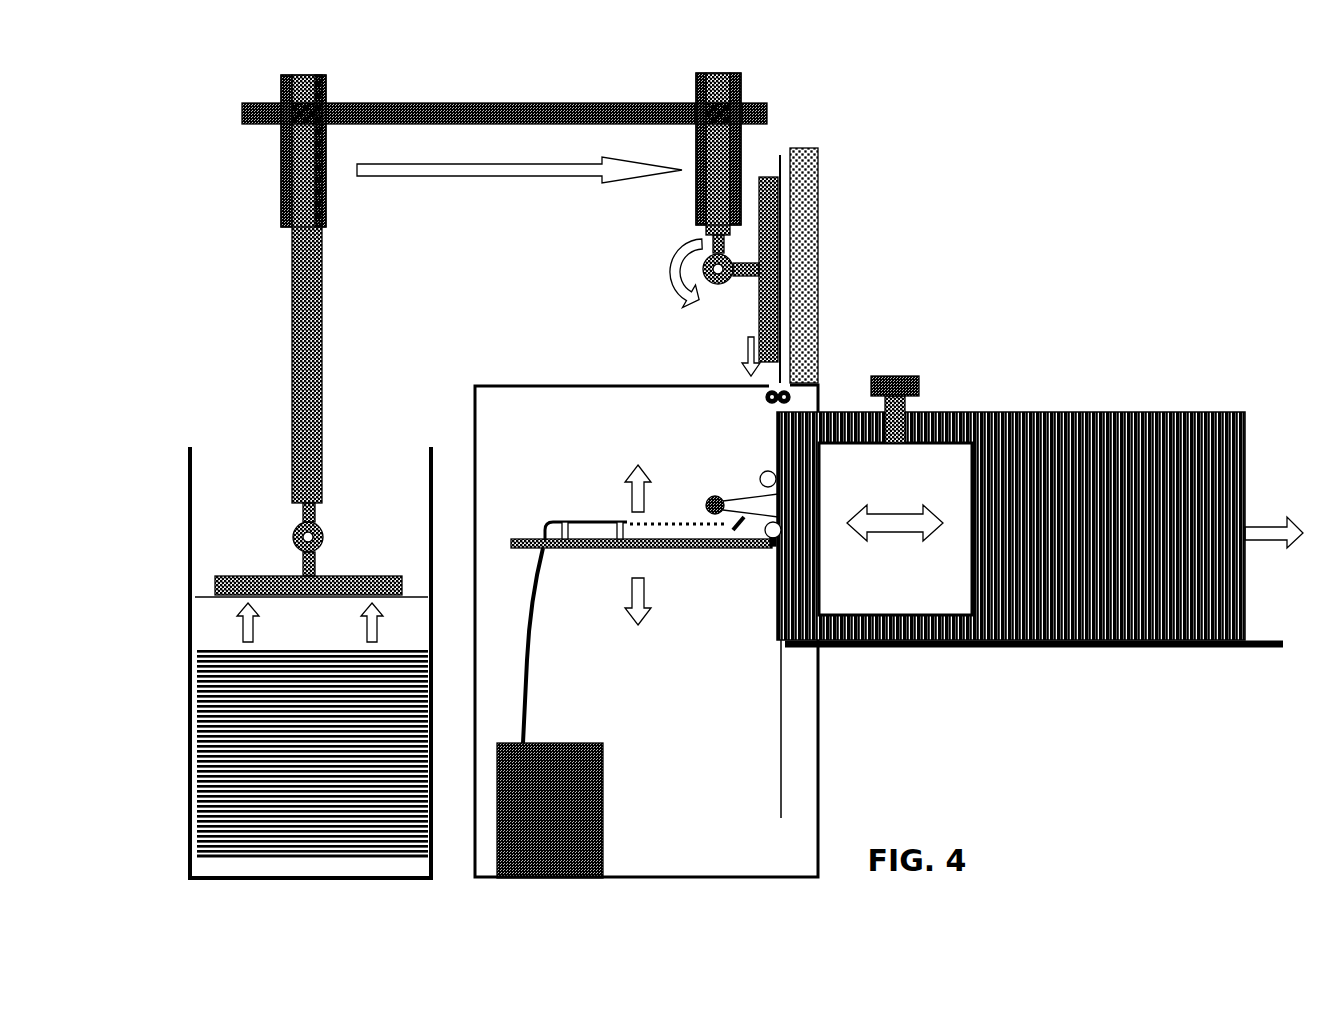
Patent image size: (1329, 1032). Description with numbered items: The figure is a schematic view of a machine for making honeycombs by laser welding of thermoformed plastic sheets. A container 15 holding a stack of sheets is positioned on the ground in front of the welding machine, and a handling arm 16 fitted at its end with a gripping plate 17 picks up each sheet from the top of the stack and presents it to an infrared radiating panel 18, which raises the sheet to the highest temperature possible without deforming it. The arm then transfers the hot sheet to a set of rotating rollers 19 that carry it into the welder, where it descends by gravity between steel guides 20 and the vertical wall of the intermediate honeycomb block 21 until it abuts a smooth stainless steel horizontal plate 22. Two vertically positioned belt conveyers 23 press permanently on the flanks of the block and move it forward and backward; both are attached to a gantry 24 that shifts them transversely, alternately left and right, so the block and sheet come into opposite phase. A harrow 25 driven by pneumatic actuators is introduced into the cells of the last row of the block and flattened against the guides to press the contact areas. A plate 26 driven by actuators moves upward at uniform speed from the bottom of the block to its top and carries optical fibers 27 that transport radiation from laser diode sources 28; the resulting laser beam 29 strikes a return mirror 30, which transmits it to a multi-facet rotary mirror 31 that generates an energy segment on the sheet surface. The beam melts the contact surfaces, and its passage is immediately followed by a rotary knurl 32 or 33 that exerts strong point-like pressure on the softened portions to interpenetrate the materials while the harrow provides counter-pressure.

The container 15 is at (195, 549).
The handling arm 16 is at (310, 340).
The gripping plate 17 is at (347, 575).
The infrared radiating panel 18 is at (810, 223).
The rotating rollers 19 is at (766, 402).
The steel guides 20 is at (776, 618).
The intermediate honeycomb block 21 is at (1136, 418).
The smooth stainless steel horizontal plate 22 is at (868, 650).
The belt conveyers 23 is at (935, 575).
The gantry 24 is at (910, 385).
The harrow 25 is at (788, 652).
The plate 26 is at (520, 538).
The optical fibers 27 is at (590, 520).
The laser diode sources 28 is at (550, 713).
The laser beam 29 is at (645, 528).
The return mirror 30 is at (732, 530).
The multi-facet rotary mirror 31 is at (710, 500).
The rotary knurl 32 is at (773, 543).
The rotary knurl 33 is at (760, 475).